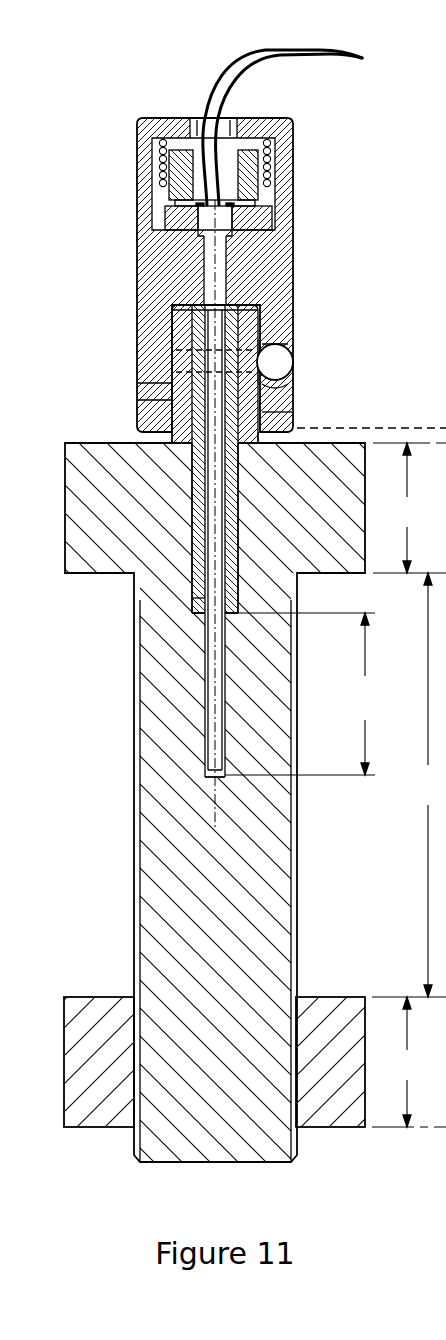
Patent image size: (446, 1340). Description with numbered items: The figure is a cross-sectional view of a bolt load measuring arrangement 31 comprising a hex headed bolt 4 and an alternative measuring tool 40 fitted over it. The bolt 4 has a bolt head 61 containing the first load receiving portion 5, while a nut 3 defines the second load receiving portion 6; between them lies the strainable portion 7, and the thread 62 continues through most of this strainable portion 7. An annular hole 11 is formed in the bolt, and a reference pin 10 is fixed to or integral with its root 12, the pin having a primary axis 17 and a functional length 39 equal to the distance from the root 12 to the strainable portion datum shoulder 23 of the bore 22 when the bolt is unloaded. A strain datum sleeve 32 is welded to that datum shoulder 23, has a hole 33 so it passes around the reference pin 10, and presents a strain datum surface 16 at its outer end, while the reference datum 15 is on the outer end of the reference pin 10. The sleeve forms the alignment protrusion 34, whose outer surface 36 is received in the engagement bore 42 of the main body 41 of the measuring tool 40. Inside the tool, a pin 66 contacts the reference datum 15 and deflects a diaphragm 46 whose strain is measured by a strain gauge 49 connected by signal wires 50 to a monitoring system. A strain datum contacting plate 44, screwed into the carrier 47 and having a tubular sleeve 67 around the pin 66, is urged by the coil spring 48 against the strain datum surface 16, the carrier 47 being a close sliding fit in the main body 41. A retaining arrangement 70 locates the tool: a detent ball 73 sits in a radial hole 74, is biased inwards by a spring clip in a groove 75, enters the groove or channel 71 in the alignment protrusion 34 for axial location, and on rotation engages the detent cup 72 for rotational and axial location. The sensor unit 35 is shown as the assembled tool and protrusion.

The bolt load measuring arrangement 31 is at (80, 70).
The signal wires 50 is at (312, 48).
The coil spring 48 is at (270, 123).
The measuring tool 40 is at (350, 133).
The strain gauge 49 is at (159, 172).
The diaphragm 46 is at (176, 205).
The carrier 47 is at (276, 194).
The strain datum contacting plate 44 is at (188, 220).
The tubular portion or sleeve 67 is at (188, 252).
The main body 41 is at (290, 243).
The pin 66 is at (221, 266).
The alignment protrusion 34 is at (176, 312).
The reference datum 15 is at (234, 316).
The groove 75 is at (291, 342).
The strain datum surface 16 is at (175, 322).
The retaining arrangement 70 is at (352, 362).
The groove or channel 71 is at (176, 350).
The detent ball 73 is at (283, 364).
The engagement bore 42 is at (150, 384).
The radial hole 74 is at (290, 392).
The hole 33 is at (186, 400).
The detent cup 72 is at (290, 414).
The outer surface 36 is at (298, 428).
The sensor unit 35 is at (125, 434).
The first load receiving portion 5 is at (409, 508).
The bolt head 61 is at (105, 563).
The bore 22 is at (239, 572).
The strain datum sleeve 32 is at (197, 580).
The strainable portion datum shoulder 23 is at (232, 616).
The reference pin 10 is at (208, 683).
The functional length 39 is at (300, 694).
The hole 11 is at (207, 736).
The root 12 is at (207, 779).
The primary axis 17 is at (218, 818).
The strainable portion 7 is at (409, 785).
The thread 62 is at (136, 893).
The nut 3 is at (87, 1003).
The second load receiving portion 6 is at (409, 1062).
The bolt 4 is at (157, 1148).